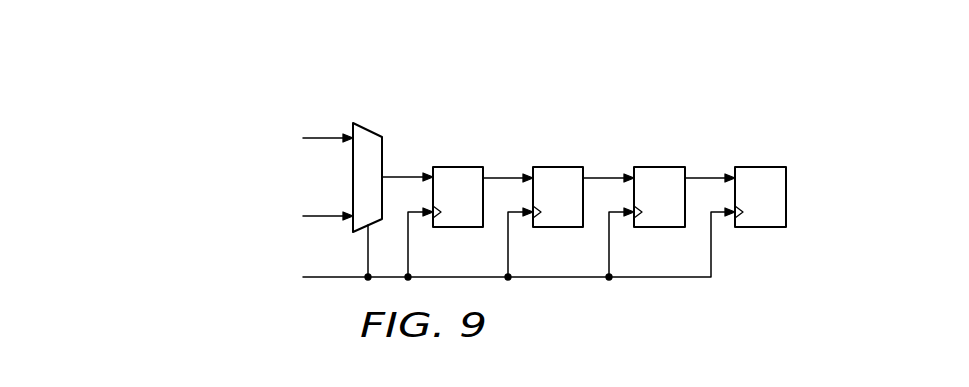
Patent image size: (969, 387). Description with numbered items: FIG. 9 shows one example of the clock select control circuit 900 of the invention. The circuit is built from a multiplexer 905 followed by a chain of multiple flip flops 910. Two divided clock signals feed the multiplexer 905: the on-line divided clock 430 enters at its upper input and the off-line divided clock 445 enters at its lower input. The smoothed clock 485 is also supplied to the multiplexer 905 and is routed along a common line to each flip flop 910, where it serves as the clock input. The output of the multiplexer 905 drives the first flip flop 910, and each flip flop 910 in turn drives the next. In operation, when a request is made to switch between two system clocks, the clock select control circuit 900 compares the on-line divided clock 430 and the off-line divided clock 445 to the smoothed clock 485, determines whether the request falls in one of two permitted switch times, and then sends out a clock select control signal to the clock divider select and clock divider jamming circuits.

The clock smoothing circuit 900 is at (536, 52).
The on-line divided clock 430 is at (148, 135).
The off-line divided clock 445 is at (148, 215).
The smoothed clock 485 is at (130, 278).
The multiplexer 905 is at (369, 131).
The flip flops 910 is at (458, 167).